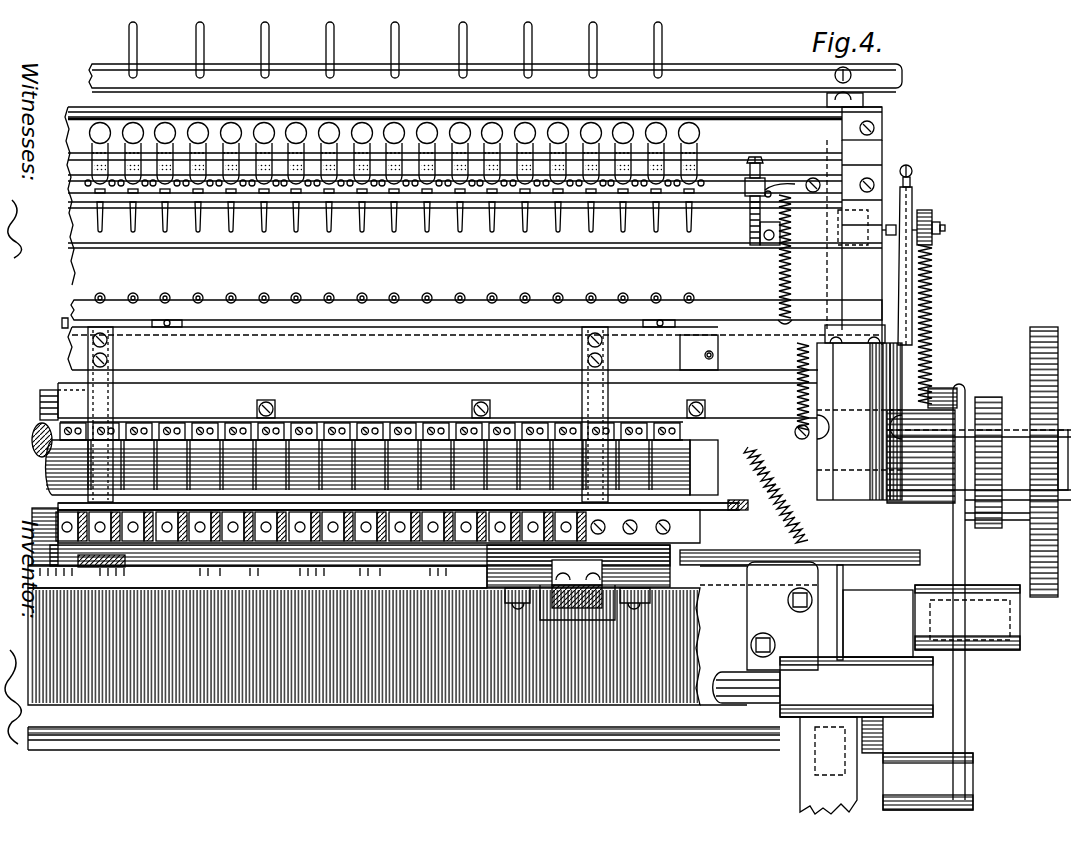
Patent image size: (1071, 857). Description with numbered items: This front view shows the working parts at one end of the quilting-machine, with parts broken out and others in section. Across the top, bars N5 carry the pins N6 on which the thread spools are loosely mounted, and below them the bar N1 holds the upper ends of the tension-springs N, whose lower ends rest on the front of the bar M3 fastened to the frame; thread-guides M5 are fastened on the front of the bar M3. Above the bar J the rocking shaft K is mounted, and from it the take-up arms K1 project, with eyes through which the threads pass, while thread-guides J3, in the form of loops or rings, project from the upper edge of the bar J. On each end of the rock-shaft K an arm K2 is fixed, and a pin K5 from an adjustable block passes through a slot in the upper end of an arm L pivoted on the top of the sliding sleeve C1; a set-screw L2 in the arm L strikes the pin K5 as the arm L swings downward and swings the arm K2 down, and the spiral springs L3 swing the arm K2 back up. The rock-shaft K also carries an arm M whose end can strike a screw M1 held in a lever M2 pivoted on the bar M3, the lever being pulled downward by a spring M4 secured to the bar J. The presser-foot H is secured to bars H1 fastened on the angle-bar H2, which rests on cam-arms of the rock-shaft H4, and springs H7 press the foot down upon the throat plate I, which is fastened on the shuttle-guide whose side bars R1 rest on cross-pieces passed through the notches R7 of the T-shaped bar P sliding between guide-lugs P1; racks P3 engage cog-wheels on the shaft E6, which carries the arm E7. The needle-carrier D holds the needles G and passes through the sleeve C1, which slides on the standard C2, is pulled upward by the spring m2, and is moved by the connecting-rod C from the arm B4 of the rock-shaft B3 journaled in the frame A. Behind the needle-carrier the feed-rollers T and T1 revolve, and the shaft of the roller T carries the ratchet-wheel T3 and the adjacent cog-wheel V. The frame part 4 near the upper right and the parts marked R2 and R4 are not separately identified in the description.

The pins N6 is at (395, 48).
The bars N5 is at (495, 81).
The bar N1 is at (150, 107).
The tension-springs N is at (394, 158).
The bar M3 is at (68, 190).
The rocking shaft K is at (394, 224).
The take-up arms K1 is at (248, 232).
The thread-guides M5 is at (310, 194).
The screw M1 is at (760, 158).
The lever M2 is at (774, 180).
The arm M is at (752, 250).
The springs M4 is at (802, 259).
The frame 4 is at (844, 226).
The set-screw L2 is at (912, 161).
The arm L is at (898, 266).
The pin K5 is at (893, 215).
The arm K2 is at (928, 214).
The spiral springs L3 is at (941, 324).
The thread-guides J3 is at (400, 292).
The bar J is at (476, 313).
The rock-shaft H4 is at (56, 315).
The presser-foot H is at (68, 326).
The angle-bar H2 is at (375, 346).
The bars H1 is at (113, 358).
The springs H7 is at (722, 372).
The needle-carrier D is at (437, 400).
The needles G is at (382, 458).
The feed-roller T1 is at (35, 413).
The feed-roller T is at (35, 452).
The bed or throat plate I is at (403, 509).
The strip R2 is at (370, 536).
The notches R7 is at (130, 566).
The plate R4 is at (128, 590).
The T-shaped bar P is at (372, 576).
The side bars R1 is at (420, 570).
The guide-lugs P1 is at (577, 569).
The racks P3 is at (578, 610).
The frame A is at (423, 633).
The shaft E6 is at (746, 672).
The arm E7 is at (915, 640).
The arm B4 is at (883, 740).
The rock-shaft B3 is at (660, 752).
The connecting-rods C is at (965, 565).
The standards C2 is at (855, 345).
The sliding sleeves C1 is at (859, 421).
The spring m2 is at (776, 443).
The ratchet-wheel T3 is at (967, 445).
The cog-wheel V is at (1044, 450).